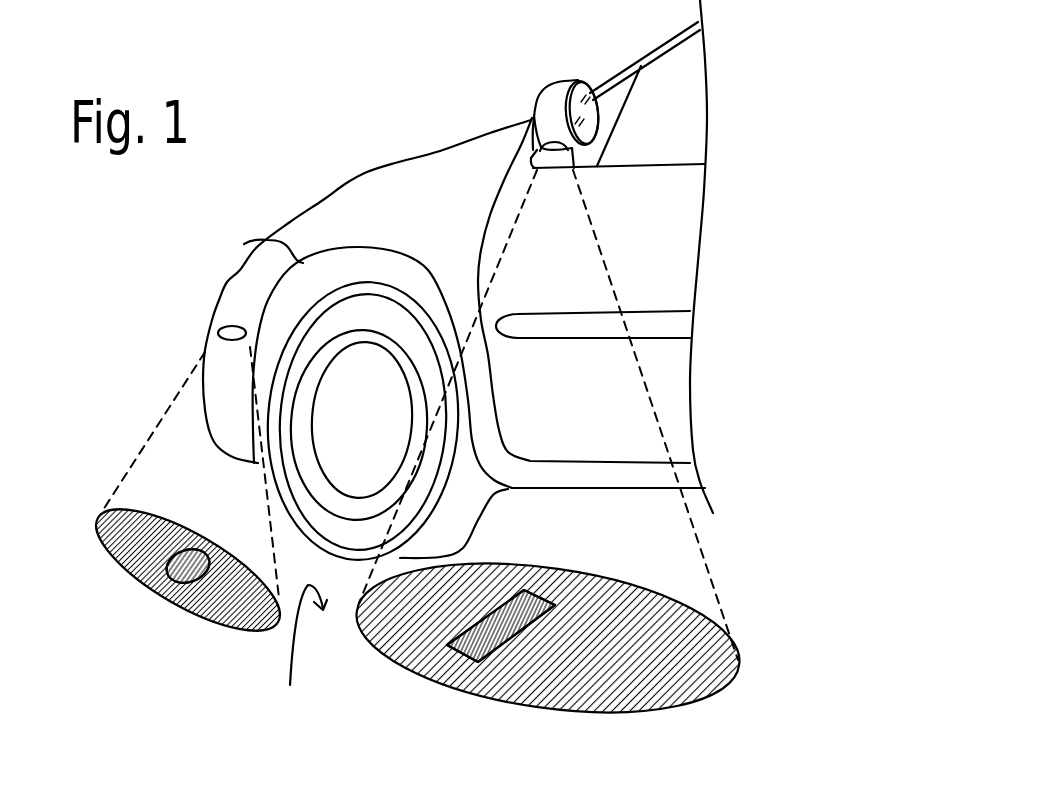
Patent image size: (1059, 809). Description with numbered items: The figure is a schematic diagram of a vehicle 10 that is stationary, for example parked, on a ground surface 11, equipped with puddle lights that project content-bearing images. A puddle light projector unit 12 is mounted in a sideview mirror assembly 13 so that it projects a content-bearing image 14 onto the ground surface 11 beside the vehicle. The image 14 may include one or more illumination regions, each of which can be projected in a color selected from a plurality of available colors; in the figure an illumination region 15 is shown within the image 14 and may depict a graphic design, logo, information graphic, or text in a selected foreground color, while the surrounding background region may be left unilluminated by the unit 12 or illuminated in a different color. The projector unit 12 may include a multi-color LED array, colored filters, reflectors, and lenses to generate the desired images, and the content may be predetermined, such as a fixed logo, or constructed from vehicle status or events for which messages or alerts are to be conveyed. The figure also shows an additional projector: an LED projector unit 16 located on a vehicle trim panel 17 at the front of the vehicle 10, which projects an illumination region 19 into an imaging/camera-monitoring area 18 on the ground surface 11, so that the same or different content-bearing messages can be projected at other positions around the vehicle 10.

The vehicle 10 is at (365, 159).
The ground surface 11 is at (304, 651).
The puddle light projector unit 12 is at (533, 115).
The sideview mirror assembly 13 is at (559, 81).
The content-bearing image 14 is at (678, 725).
The illumination region 15 is at (484, 644).
The LED projector unit 16 is at (220, 327).
The vehicle trim panel 17 is at (238, 280).
The imaging/camera-monitoring area 18 is at (140, 577).
The illumination region 19 is at (200, 560).